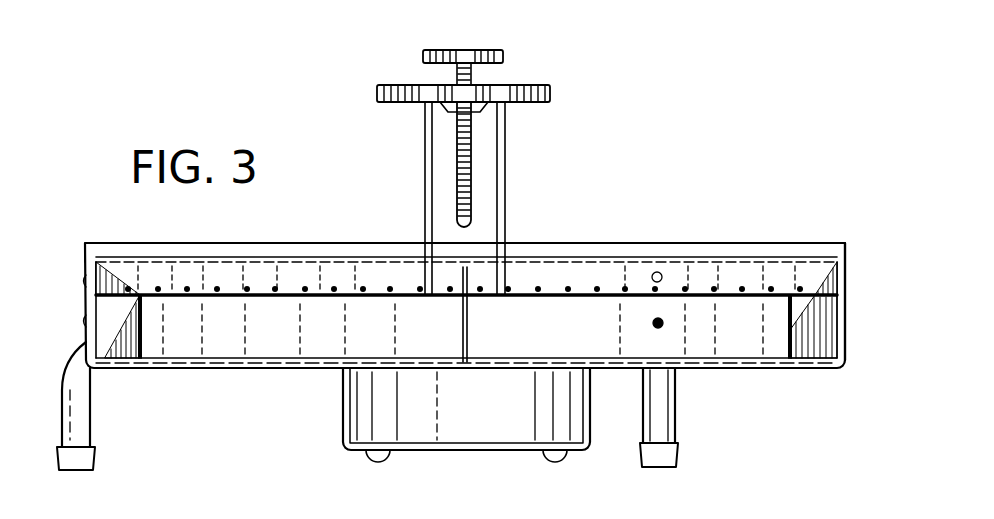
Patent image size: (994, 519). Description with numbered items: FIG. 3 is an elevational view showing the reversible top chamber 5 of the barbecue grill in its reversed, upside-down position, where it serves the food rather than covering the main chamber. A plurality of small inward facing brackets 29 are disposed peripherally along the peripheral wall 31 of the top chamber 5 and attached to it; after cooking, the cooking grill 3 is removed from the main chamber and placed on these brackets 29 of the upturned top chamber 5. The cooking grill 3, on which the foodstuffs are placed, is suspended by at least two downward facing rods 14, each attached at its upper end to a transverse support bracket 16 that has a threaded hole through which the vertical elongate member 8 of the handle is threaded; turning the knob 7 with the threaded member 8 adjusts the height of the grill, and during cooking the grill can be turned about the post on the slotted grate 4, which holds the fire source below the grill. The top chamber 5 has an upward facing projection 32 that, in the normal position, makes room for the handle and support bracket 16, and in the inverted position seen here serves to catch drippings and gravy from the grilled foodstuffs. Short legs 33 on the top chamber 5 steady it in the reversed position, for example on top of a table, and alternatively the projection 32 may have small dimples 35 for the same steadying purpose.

The cooking grill 3 is at (580, 297).
The slotted grate 4 is at (779, 205).
The top chamber 5 is at (243, 374).
The knob 7 is at (482, 50).
The vertical elongate member 8 is at (473, 147).
The downward facing rods 14 is at (424, 168).
The transverse support bracket 16 is at (515, 87).
The inward facing brackets 29 is at (141, 318).
The peripheral wall 31 is at (848, 325).
The upward facing projection 32 is at (342, 408).
The legs 33 is at (62, 410).
The dimples 35 is at (368, 460).